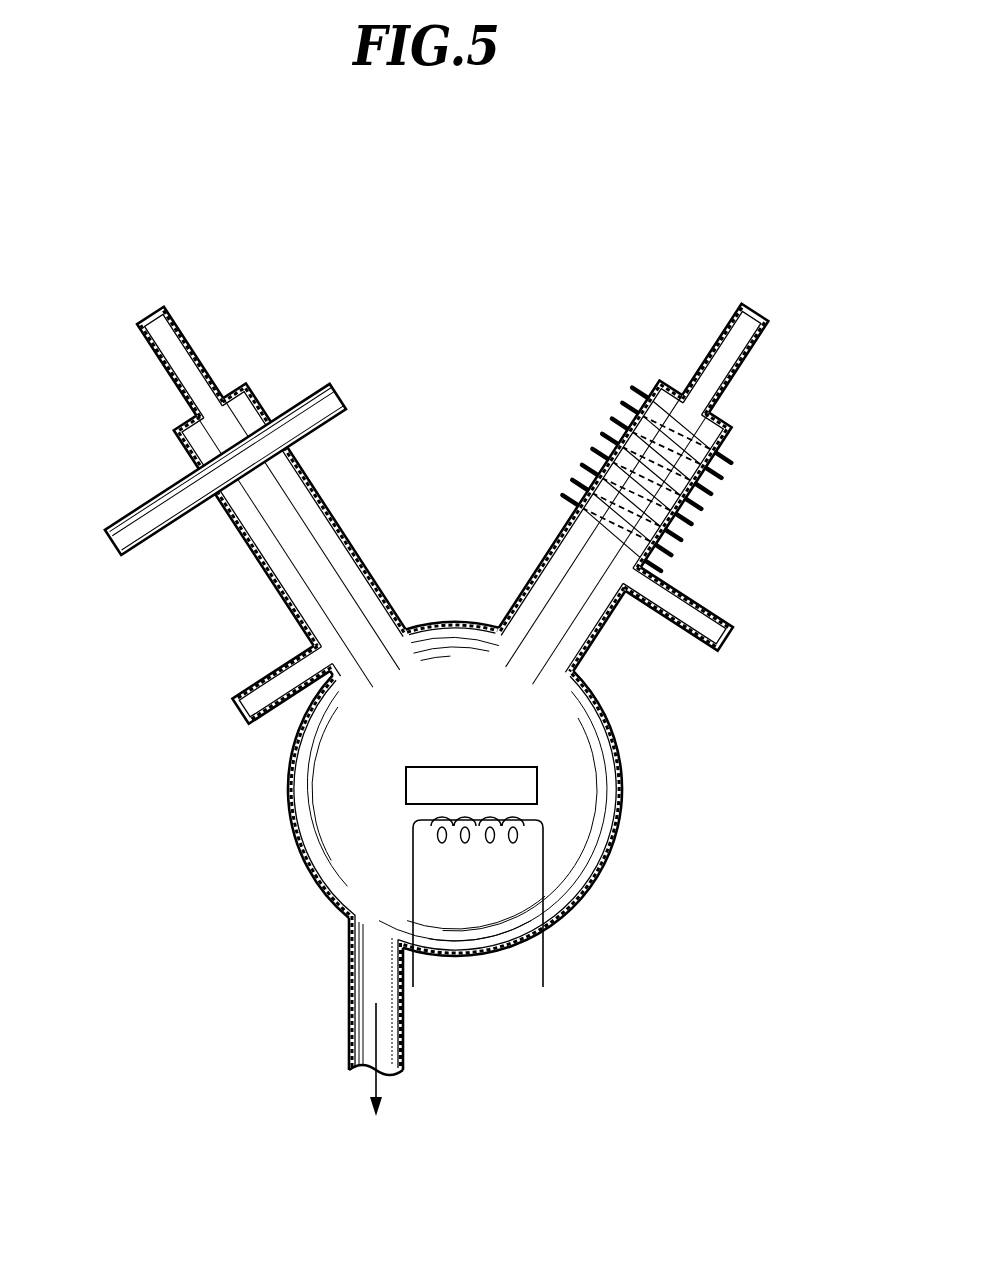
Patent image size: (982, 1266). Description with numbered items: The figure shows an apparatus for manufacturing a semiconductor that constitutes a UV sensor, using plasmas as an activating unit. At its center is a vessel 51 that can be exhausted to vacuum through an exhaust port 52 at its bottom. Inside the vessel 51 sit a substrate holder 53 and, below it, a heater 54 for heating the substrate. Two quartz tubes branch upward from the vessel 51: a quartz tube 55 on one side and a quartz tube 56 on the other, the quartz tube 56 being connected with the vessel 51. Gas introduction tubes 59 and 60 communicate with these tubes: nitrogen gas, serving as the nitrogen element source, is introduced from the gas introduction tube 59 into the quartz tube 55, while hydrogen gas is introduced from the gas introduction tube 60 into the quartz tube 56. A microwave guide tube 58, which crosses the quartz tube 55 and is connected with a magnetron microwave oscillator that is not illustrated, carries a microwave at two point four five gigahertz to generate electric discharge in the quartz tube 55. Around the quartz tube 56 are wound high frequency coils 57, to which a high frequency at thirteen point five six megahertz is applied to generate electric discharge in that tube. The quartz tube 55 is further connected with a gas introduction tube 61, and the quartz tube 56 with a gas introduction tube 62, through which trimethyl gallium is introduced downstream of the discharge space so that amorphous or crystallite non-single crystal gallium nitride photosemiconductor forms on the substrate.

The vessel 51 is at (622, 738).
The exhaust port 52 is at (350, 1003).
The substrate holder 53 is at (467, 767).
The heater 54 is at (413, 898).
The quartz tube 55 is at (243, 540).
The quartz tube 56 is at (733, 427).
The high frequency coils 57 is at (622, 415).
The microwave guide tube 58 is at (160, 497).
The gas introduction tube 59 is at (185, 336).
The gas introduction tube 60 is at (722, 348).
The gas introduction tube 61 is at (250, 680).
The gas introduction tube 62 is at (707, 604).